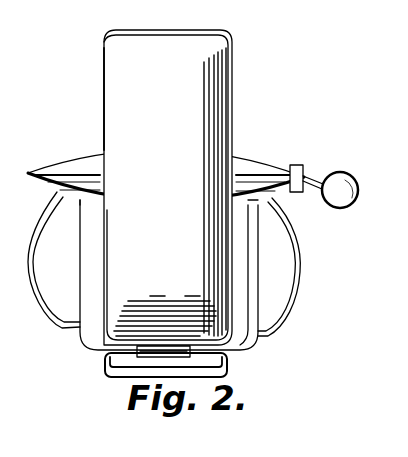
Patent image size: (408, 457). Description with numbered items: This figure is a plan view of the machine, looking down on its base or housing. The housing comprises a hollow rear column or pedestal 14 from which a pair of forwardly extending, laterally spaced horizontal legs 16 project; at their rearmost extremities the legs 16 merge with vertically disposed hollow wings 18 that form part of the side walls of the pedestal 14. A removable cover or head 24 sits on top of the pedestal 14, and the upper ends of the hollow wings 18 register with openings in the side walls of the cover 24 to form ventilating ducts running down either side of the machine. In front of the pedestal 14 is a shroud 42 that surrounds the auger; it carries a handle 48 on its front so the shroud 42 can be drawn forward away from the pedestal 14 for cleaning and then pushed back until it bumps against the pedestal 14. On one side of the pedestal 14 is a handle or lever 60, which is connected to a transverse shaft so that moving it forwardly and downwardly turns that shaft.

The pedestal 14 is at (193, 33).
The cover 24 is at (117, 64).
The hollow wings 18 is at (65, 158).
The handle 60 is at (345, 178).
The shroud 42 is at (90, 249).
The legs 16 is at (273, 329).
The handle 48 is at (227, 358).